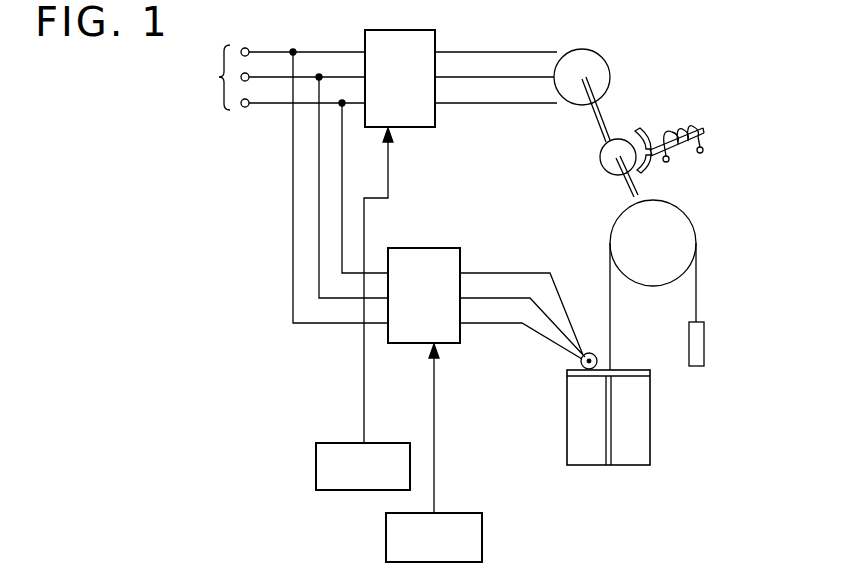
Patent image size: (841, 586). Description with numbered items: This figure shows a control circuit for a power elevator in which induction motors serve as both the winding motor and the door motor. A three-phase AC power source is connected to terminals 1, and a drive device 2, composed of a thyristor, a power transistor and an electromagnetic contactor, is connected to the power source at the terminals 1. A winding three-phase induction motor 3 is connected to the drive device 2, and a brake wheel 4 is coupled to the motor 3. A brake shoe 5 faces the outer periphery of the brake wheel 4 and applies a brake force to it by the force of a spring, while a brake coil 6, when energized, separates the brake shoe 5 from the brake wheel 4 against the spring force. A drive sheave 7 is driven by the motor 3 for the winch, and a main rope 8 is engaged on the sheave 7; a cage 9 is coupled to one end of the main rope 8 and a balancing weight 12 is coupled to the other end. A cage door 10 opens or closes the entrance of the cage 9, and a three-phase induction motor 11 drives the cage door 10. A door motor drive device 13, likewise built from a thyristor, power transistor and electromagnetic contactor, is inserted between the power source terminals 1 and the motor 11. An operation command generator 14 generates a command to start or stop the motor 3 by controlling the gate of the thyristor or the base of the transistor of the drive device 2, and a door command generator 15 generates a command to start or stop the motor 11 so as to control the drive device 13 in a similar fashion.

The terminals 1 is at (284, 77).
The drive device 2 is at (400, 29).
The winding three-phase induction motor 3 is at (608, 70).
The brake wheel 4 is at (621, 139).
The brake shoe 5 is at (645, 134).
The brake coil 6 is at (670, 130).
The drive sheave 7 is at (690, 227).
The main rope 8 is at (698, 288).
The cage 9 is at (650, 420).
The cage door 10 is at (577, 421).
The three-phase induction motor 11 is at (589, 352).
The balancing weight 12 is at (705, 344).
The door motor drive device 13 is at (426, 248).
The operation command generator 14 is at (316, 465).
The door command generator 15 is at (482, 536).